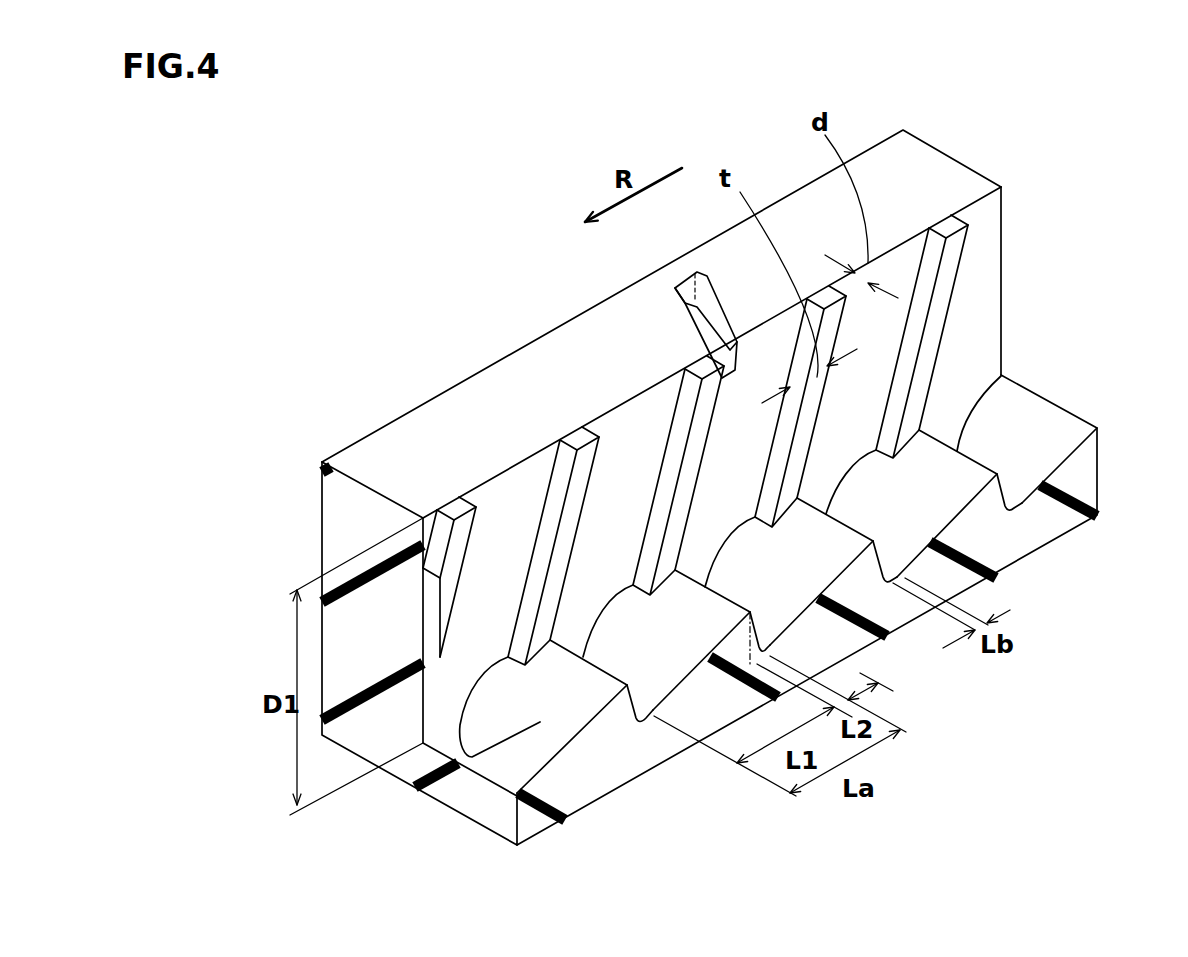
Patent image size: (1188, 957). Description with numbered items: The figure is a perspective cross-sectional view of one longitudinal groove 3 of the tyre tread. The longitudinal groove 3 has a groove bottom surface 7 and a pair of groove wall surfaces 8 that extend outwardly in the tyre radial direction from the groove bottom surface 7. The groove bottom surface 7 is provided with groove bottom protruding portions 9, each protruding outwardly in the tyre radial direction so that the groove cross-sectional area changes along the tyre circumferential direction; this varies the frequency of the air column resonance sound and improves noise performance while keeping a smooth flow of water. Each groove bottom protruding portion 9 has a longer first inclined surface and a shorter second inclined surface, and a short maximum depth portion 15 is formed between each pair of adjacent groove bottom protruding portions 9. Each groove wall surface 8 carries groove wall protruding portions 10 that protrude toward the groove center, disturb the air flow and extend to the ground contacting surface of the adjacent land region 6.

The longitudinal groove 3 is at (753, 494).
The land region 6 is at (923, 180).
The groove bottom surface 7 is at (1023, 437).
The groove wall surface 8 is at (502, 537).
The groove bottom protruding portion 9 is at (540, 722).
The groove wall protruding portion 10 is at (668, 470).
The maximum depth portion 15 is at (772, 643).